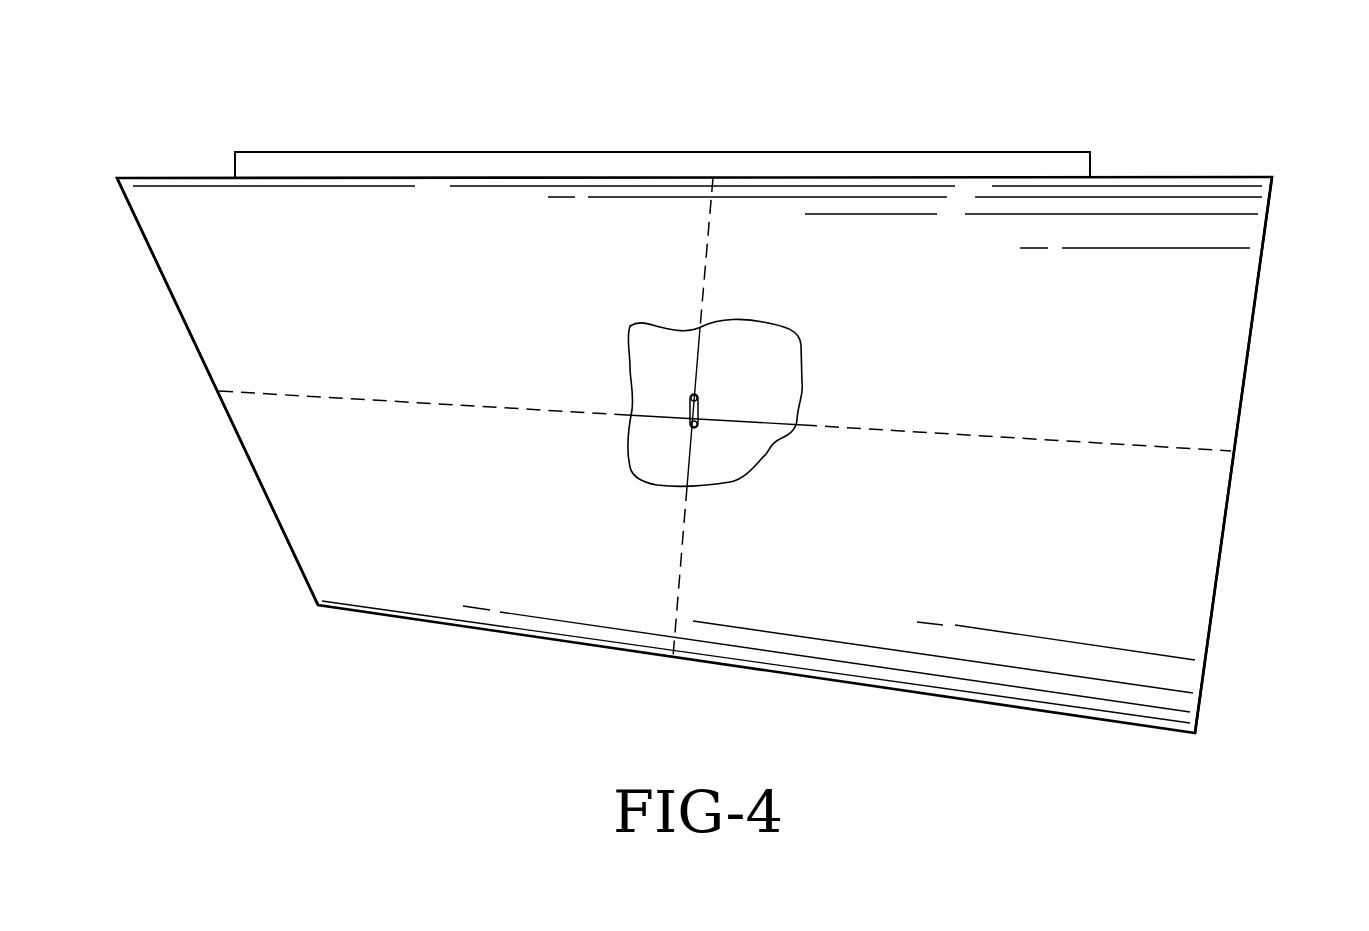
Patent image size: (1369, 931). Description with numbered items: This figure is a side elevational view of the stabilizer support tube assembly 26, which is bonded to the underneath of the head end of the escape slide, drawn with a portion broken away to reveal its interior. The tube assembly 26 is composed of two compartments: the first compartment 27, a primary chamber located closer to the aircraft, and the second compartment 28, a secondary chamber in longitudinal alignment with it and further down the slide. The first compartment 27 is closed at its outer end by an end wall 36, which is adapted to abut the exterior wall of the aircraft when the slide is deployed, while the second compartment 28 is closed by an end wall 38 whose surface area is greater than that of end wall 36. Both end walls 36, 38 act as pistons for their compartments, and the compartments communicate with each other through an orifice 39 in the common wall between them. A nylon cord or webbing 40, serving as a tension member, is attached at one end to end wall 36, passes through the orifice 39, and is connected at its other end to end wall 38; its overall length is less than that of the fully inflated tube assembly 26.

The stabilizer support tube assembly 26 is at (188, 128).
The first compartment 27 is at (412, 248).
The second compartment 28 is at (955, 250).
The end wall 36 is at (182, 318).
The end wall 38 is at (1253, 338).
The orifice 39 is at (702, 397).
The nylon cord or webbing 40 is at (648, 412).